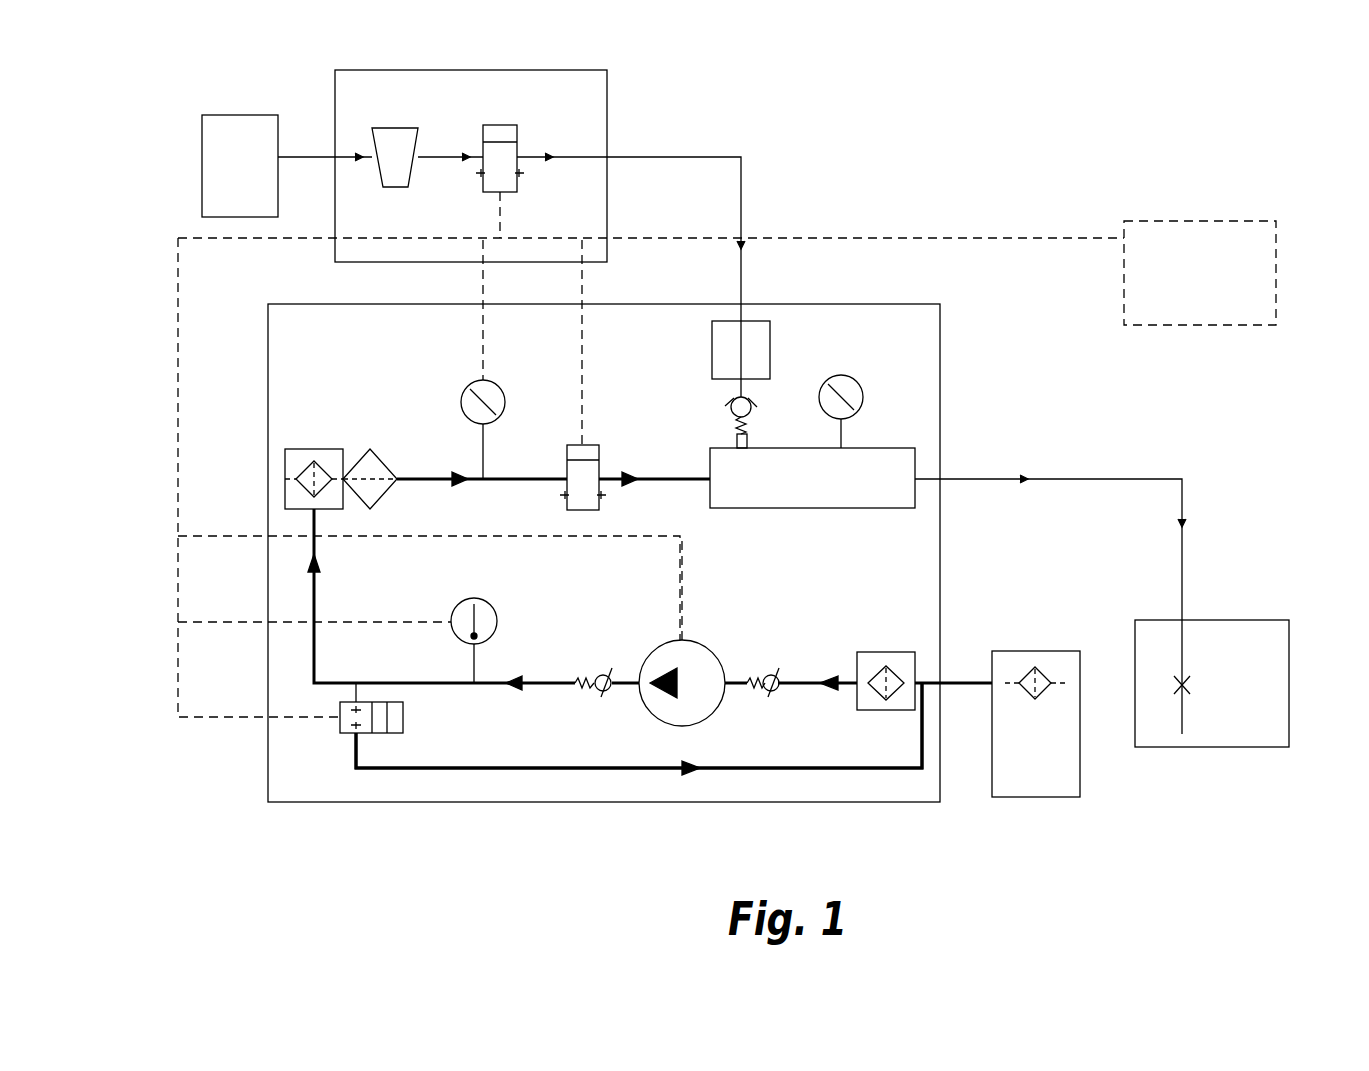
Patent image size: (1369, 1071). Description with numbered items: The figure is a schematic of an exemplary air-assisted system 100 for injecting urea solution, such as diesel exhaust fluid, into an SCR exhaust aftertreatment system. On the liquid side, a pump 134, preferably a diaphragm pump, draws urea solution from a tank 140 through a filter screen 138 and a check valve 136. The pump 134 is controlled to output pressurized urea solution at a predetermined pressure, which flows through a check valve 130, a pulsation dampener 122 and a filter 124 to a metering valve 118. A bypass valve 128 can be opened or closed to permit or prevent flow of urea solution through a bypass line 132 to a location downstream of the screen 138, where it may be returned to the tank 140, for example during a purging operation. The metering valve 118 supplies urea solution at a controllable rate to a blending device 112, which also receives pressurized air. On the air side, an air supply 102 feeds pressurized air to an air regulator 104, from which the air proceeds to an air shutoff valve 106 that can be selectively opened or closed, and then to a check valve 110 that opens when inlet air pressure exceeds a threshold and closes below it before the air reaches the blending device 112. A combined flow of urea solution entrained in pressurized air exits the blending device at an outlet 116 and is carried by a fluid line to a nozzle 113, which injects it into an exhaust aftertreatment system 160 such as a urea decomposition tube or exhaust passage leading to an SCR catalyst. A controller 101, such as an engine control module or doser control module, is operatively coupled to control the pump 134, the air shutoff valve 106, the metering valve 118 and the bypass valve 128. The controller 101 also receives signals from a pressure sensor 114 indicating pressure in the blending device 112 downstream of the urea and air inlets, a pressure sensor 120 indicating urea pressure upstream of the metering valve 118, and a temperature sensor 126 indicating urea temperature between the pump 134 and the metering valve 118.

The system 100 is at (928, 149).
The controller 101 is at (1277, 259).
The air supply 102 is at (233, 114).
The air regulator 104 is at (385, 127).
The air shutoff valve 106 is at (500, 124).
The check valve 110 is at (752, 414).
The blending device 112 is at (808, 509).
The nozzle 113 is at (1192, 684).
The pressure sensor 114 is at (858, 392).
The outlet 116 is at (943, 464).
The metering valve 118 is at (600, 500).
The pressure sensor 120 is at (505, 389).
The pulsation dampener 122 is at (285, 490).
The filter 124 is at (390, 462).
The temperature sensor 126 is at (452, 617).
The bypass valve 128 is at (338, 725).
The check valve 130 is at (602, 672).
The bypass line 132 is at (699, 773).
The pump 134 is at (697, 722).
The check valve 136 is at (763, 672).
The filter screen 138 is at (897, 652).
The tank 140 is at (1082, 768).
The exhaust aftertreatment system 160 is at (1290, 662).